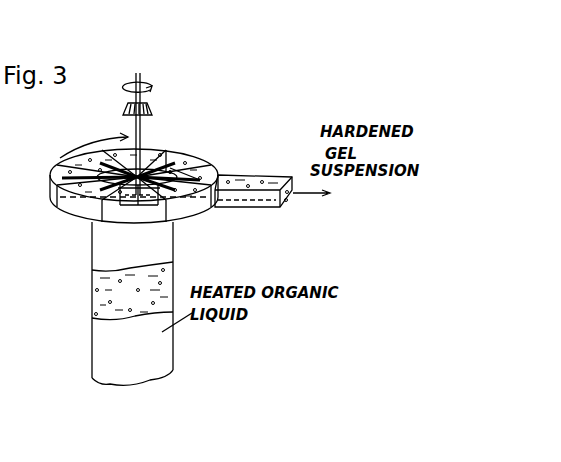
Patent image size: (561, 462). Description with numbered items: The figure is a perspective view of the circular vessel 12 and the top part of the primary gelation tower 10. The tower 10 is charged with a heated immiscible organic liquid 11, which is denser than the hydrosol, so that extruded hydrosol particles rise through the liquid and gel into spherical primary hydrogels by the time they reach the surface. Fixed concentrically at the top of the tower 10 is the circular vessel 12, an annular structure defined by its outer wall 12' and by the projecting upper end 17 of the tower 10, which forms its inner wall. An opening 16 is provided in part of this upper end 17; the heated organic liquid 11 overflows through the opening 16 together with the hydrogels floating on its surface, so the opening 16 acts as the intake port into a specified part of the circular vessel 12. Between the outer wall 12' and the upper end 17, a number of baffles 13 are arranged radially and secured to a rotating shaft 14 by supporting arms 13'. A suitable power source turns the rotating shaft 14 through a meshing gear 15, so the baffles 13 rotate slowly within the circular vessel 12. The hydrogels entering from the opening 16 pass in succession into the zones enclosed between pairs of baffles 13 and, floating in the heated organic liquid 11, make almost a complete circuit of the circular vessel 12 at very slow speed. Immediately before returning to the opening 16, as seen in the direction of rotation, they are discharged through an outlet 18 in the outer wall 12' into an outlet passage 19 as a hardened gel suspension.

The primary gelation tower 10 is at (90, 255).
The organic liquid 11 is at (107, 295).
The circular vessel 12 is at (111, 178).
The outer wall 12' is at (154, 143).
The baffles 13 is at (203, 159).
The supporting arms 13' is at (191, 148).
The rotating shaft 14 is at (135, 128).
The meshing gear 15 is at (146, 100).
The opening 16 is at (170, 217).
The upper end of tower 17 is at (106, 198).
The outlet 18 is at (222, 178).
The outlet passage 19 is at (272, 175).